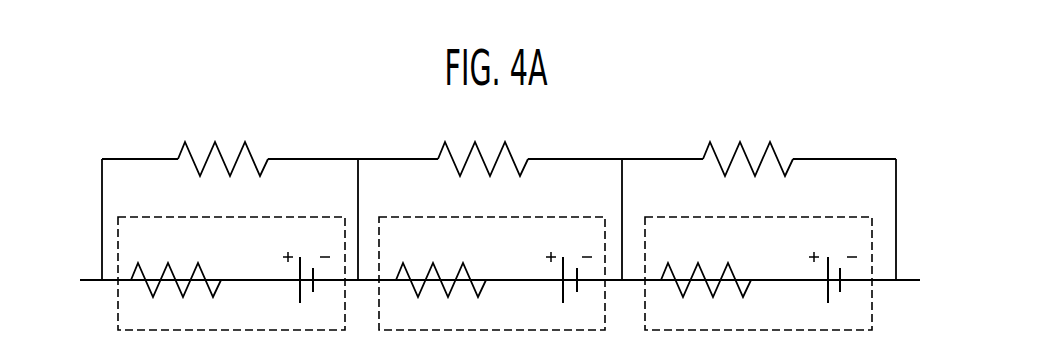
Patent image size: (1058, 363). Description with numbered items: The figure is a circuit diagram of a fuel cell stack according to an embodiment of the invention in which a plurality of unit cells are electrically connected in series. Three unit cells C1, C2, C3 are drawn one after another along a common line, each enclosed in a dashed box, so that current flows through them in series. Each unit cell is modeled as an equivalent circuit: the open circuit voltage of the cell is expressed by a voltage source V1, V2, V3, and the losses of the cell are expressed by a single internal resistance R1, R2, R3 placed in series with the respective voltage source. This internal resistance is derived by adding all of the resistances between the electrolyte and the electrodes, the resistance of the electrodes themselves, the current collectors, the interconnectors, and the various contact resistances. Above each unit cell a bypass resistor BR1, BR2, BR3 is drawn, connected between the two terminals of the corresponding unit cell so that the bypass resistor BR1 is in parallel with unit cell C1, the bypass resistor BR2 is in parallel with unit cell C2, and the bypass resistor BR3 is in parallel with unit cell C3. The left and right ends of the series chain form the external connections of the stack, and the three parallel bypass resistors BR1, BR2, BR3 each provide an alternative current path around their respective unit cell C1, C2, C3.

The bypass resistor BR1 is at (223, 174).
The unit cell C1 is at (231, 273).
The internal resistance R1 is at (176, 295).
The voltage source V1 is at (304, 289).
The bypass resistor BR2 is at (483, 174).
The unit cell C2 is at (492, 273).
The internal resistance R2 is at (441, 295).
The voltage source V2 is at (565, 289).
The bypass resistor BR3 is at (748, 174).
The unit cell C3 is at (758, 273).
The internal resistance R3 is at (706, 295).
The voltage source V3 is at (830, 289).